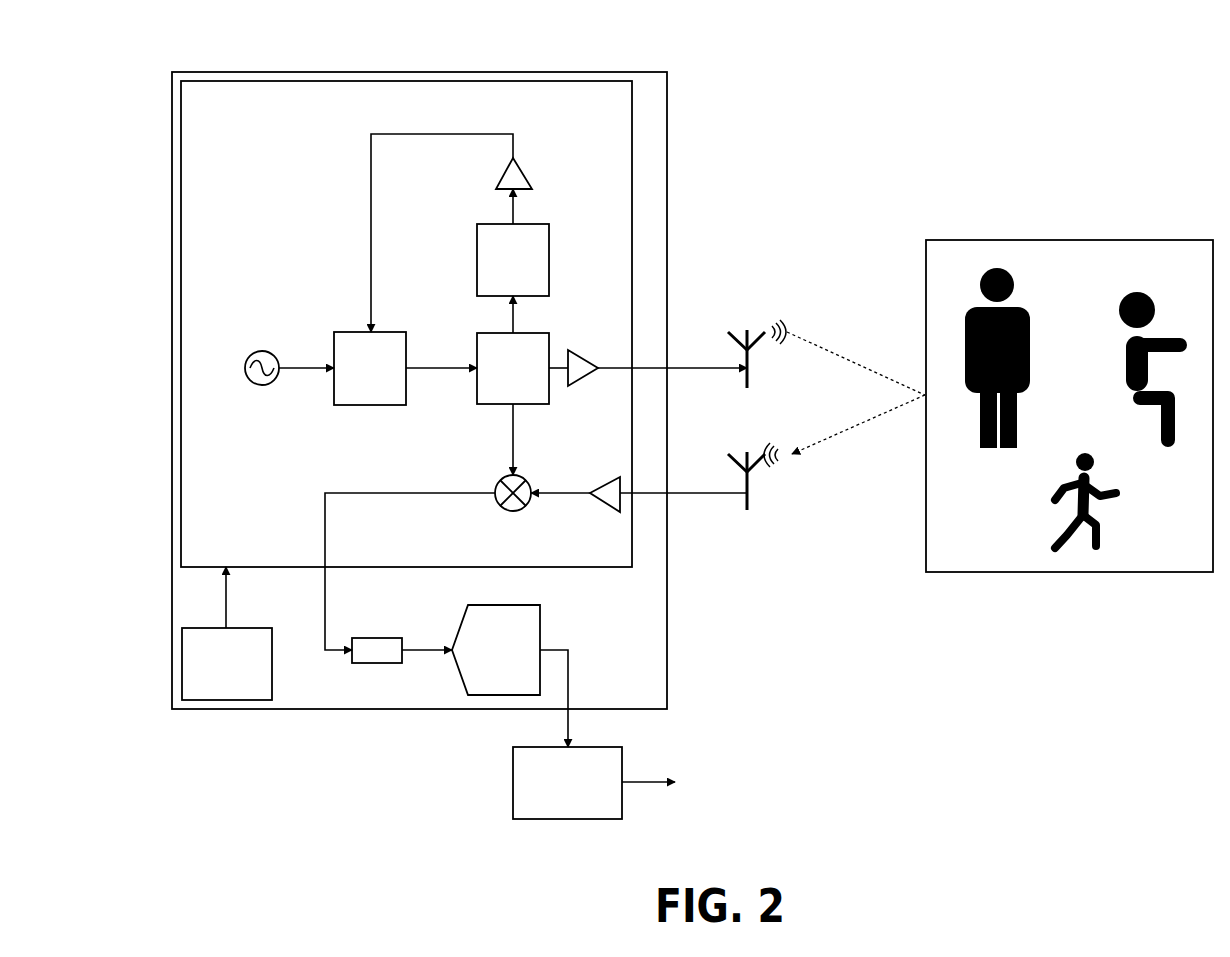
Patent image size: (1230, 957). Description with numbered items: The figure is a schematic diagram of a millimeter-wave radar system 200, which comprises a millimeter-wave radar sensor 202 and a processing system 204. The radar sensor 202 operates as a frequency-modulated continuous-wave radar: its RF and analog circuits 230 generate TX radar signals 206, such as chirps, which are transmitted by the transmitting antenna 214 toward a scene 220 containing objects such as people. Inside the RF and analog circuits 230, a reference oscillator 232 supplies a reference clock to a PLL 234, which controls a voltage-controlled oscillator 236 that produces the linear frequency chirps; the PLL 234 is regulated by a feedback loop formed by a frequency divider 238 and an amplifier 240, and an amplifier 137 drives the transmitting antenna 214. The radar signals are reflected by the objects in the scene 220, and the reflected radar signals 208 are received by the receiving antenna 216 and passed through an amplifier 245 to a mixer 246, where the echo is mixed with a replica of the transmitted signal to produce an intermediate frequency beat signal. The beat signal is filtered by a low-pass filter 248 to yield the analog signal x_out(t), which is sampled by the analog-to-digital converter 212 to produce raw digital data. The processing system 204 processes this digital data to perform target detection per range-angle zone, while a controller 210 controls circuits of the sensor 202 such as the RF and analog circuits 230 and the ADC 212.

The millimeter-wave radar system 200 is at (143, 35).
The millimeter-wave radar sensor 202 is at (667, 159).
The processing system 204 is at (605, 746).
The TX radar signals 206 is at (773, 322).
The reflected radar signals 208 is at (773, 445).
The controller 210 is at (252, 627).
The analog-to-digital converter (ADC) 212 is at (474, 605).
The transmitting antenna 214 is at (750, 379).
The receiving antennas 216 is at (750, 502).
The scene 220 is at (1020, 239).
The RF and analog circuits 230 is at (596, 569).
The reference oscillator 232 is at (246, 364).
The PLL 234 is at (393, 331).
The voltage-controlled oscillator (VCO) 236 is at (537, 332).
The frequency divider 238 is at (538, 224).
The amplifier 240 is at (524, 168).
The amplifier 137 is at (570, 387).
The amplifiers 245 is at (612, 476).
The mixers 246 is at (527, 480).
The low-pass filters (LPFs) 248 is at (388, 637).